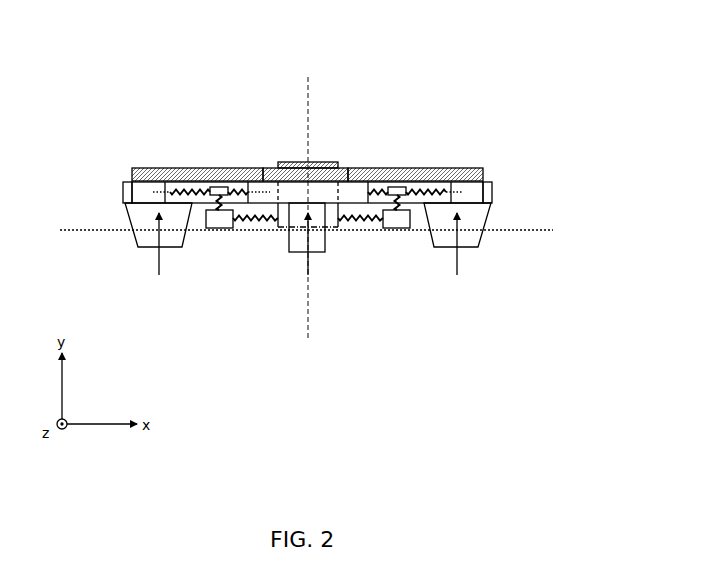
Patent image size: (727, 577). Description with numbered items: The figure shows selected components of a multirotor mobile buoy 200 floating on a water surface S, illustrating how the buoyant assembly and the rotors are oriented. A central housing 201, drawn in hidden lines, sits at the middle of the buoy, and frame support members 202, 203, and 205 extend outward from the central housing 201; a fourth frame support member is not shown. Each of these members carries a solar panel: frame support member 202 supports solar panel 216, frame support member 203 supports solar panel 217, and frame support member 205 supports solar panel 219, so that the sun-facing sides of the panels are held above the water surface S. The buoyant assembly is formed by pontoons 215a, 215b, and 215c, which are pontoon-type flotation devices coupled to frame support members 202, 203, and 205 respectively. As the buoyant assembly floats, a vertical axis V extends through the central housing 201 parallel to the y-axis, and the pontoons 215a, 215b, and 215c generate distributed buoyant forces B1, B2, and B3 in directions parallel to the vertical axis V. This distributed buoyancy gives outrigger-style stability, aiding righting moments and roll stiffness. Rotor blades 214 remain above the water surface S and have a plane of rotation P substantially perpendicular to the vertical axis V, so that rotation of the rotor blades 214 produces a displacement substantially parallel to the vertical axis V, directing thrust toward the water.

The multirotor mobile buoy 200 is at (173, 83).
The central housing 201 is at (279, 230).
The frame support member 202 is at (357, 185).
The frame support member 203 is at (493, 188).
The frame support member 205 is at (122, 192).
The rotor blades 214 is at (197, 188).
The pontoon 215a is at (327, 250).
The pontoon 215b is at (465, 237).
The pontoon 215c is at (142, 242).
The solar panel 216 is at (345, 180).
The solar panel 217 is at (472, 168).
The solar panel 219 is at (142, 168).
The plane of rotation P is at (253, 190).
The water surface S is at (513, 227).
The vertical axis V is at (310, 102).
The buoyant force B1 is at (306, 267).
The buoyant force B2 is at (455, 268).
The buoyant force B3 is at (162, 270).